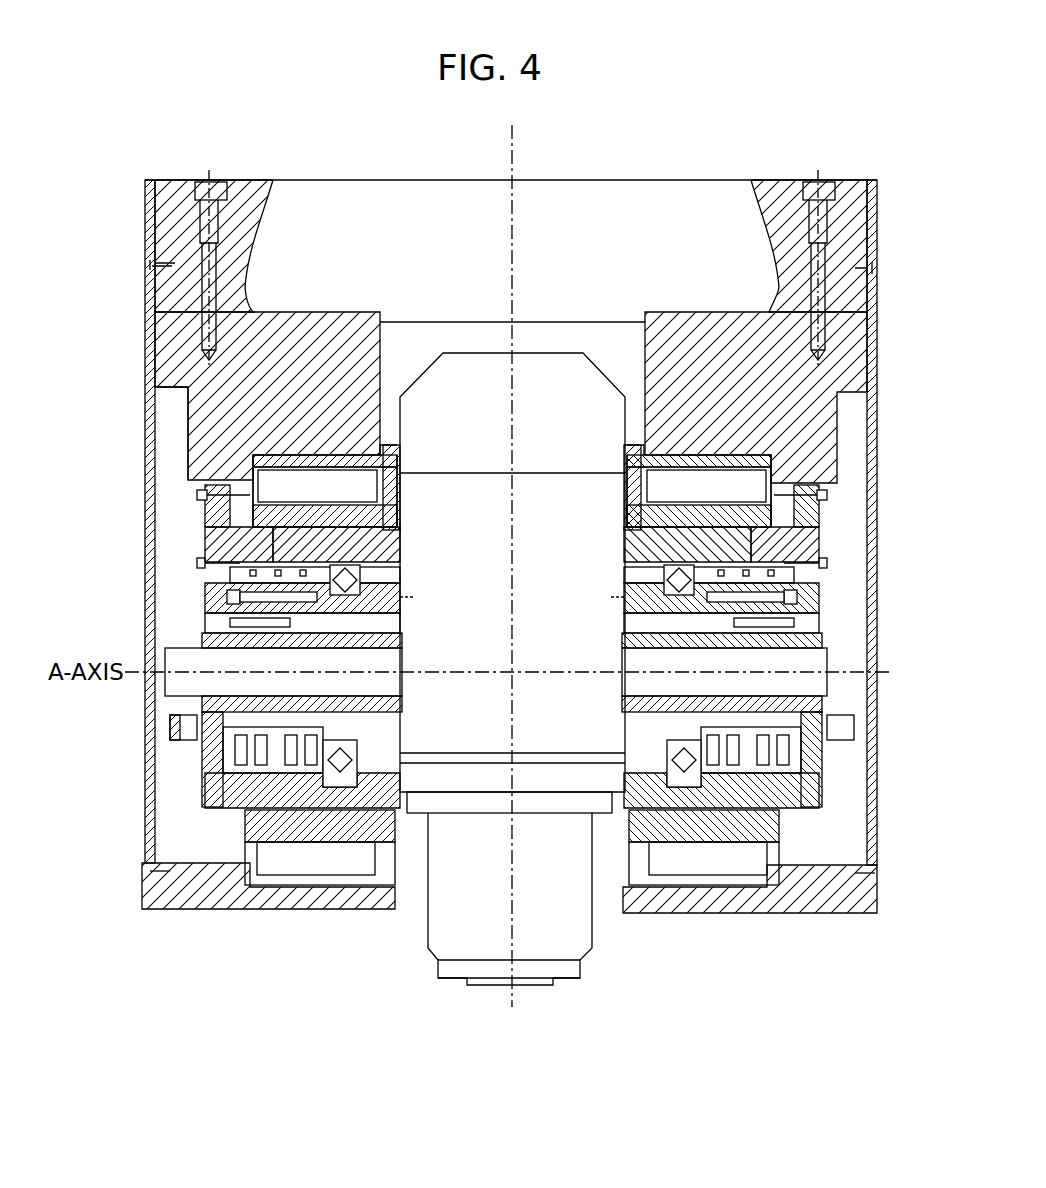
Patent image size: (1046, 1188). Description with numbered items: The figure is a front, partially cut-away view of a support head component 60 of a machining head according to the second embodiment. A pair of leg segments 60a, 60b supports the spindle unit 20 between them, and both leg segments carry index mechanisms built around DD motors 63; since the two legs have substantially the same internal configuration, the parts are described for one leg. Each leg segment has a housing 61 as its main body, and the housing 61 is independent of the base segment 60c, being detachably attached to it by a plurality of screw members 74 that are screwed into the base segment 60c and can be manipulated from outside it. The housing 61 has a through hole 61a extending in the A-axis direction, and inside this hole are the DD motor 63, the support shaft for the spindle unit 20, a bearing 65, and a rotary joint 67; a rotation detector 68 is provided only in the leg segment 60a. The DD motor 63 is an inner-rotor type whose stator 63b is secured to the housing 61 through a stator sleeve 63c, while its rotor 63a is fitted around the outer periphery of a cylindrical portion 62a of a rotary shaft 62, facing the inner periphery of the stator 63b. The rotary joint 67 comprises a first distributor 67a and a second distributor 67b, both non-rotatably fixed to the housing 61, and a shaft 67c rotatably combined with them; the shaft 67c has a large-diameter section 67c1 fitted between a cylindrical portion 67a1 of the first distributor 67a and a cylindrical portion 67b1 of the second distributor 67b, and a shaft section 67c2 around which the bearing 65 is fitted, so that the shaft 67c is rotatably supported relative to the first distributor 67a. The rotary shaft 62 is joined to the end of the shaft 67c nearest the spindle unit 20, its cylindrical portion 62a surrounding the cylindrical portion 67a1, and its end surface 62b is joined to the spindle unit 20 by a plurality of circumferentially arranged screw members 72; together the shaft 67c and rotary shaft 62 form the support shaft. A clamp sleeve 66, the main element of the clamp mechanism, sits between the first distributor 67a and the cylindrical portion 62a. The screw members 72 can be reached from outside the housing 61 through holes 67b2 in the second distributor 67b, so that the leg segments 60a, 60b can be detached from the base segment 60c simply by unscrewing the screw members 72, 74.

The spindle unit 20 is at (596, 934).
The support head component 60 is at (509, 558).
The leg segment 60a is at (330, 912).
The leg segment 60b is at (755, 912).
The base segment 60c is at (406, 200).
The housing 61 is at (480, 631).
The through hole 61a is at (185, 387).
The rotary shaft 62 is at (512, 504).
The cylindrical portion 62a is at (385, 490).
The end surface 62b is at (385, 545).
The DD motor 63 is at (477, 668).
The rotor 63a is at (315, 480).
The stator 63b is at (333, 425).
The stator sleeve 63c is at (345, 885).
The bearing 65 is at (360, 762).
The clamp sleeve 66 is at (205, 535).
The rotary joint 67 is at (449, 634).
The first distributor 67a is at (205, 548).
The cylindrical portion 67a1 is at (400, 592).
The second distributor 67b is at (213, 770).
The cylindrical portion 67b1 is at (197, 703).
The holes 67b2 is at (225, 598).
The shaft 67c is at (398, 656).
The large-diameter section 67c1 is at (240, 600).
The shaft section 67c2 is at (383, 706).
The rotation detector 68 is at (170, 725).
The screw members 72 is at (360, 592).
The screw members 74 is at (215, 186).